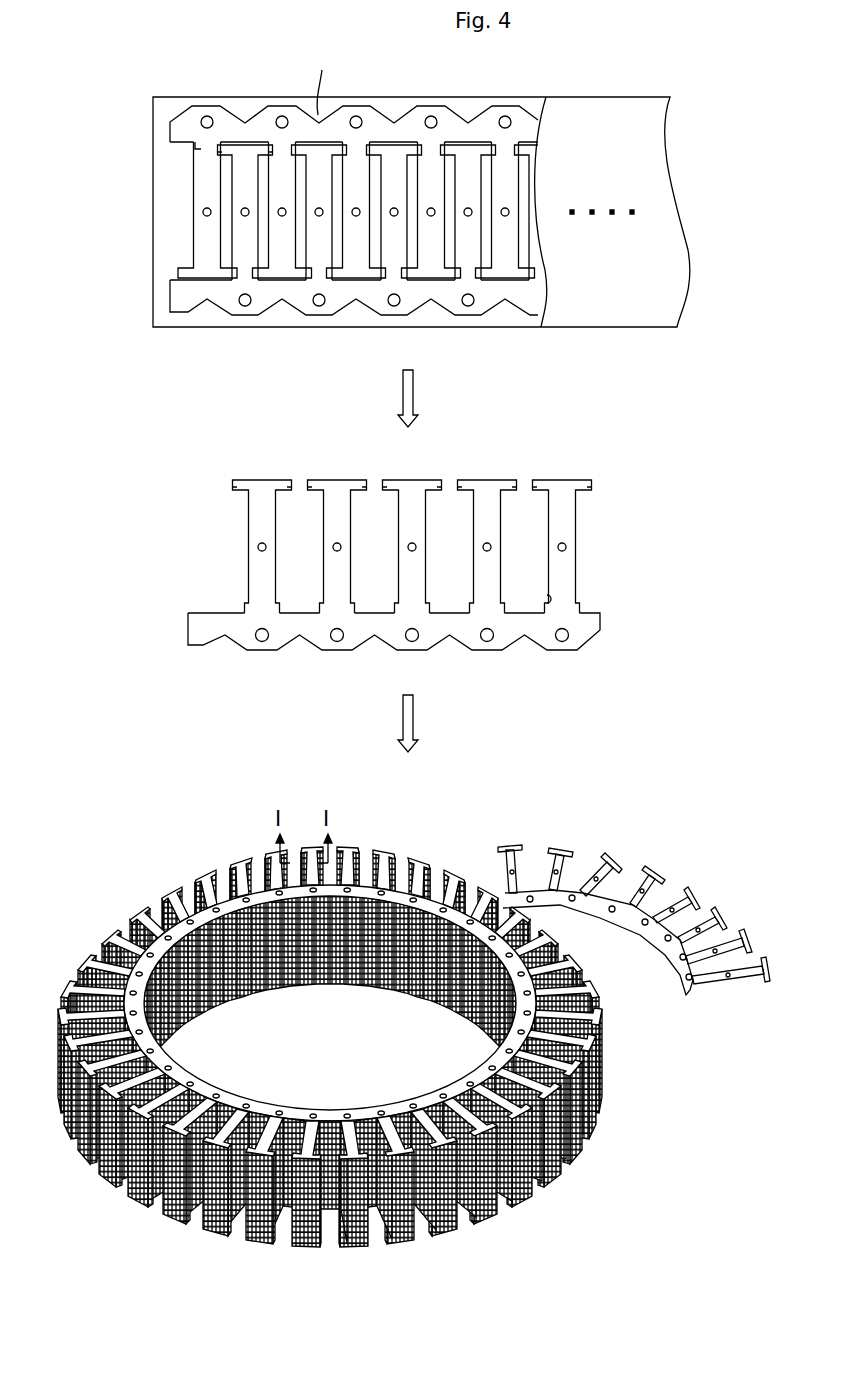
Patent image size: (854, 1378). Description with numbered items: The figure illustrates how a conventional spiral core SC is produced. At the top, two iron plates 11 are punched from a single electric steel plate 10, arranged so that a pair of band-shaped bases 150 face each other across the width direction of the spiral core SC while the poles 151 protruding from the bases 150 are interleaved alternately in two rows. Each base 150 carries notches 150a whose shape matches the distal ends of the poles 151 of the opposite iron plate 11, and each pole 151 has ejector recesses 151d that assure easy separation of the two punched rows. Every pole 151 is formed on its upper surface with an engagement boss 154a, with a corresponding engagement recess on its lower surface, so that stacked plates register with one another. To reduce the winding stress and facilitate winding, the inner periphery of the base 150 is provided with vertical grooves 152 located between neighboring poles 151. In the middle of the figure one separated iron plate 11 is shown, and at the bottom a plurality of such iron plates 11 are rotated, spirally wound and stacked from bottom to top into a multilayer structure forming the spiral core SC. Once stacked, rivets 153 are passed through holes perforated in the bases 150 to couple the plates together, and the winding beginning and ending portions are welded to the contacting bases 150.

The electric steel plate 10 is at (151, 237).
The iron plate 11 is at (527, 113).
The band-shaped base 150 is at (470, 123).
The notch 150a is at (196, 148).
The pole 151 is at (393, 165).
The ejector recess 151d is at (268, 156).
The vertical groove 152 is at (200, 1013).
The rivet 153 is at (270, 1113).
The engagement boss 154a is at (201, 212).
The spiral core SC is at (655, 1066).